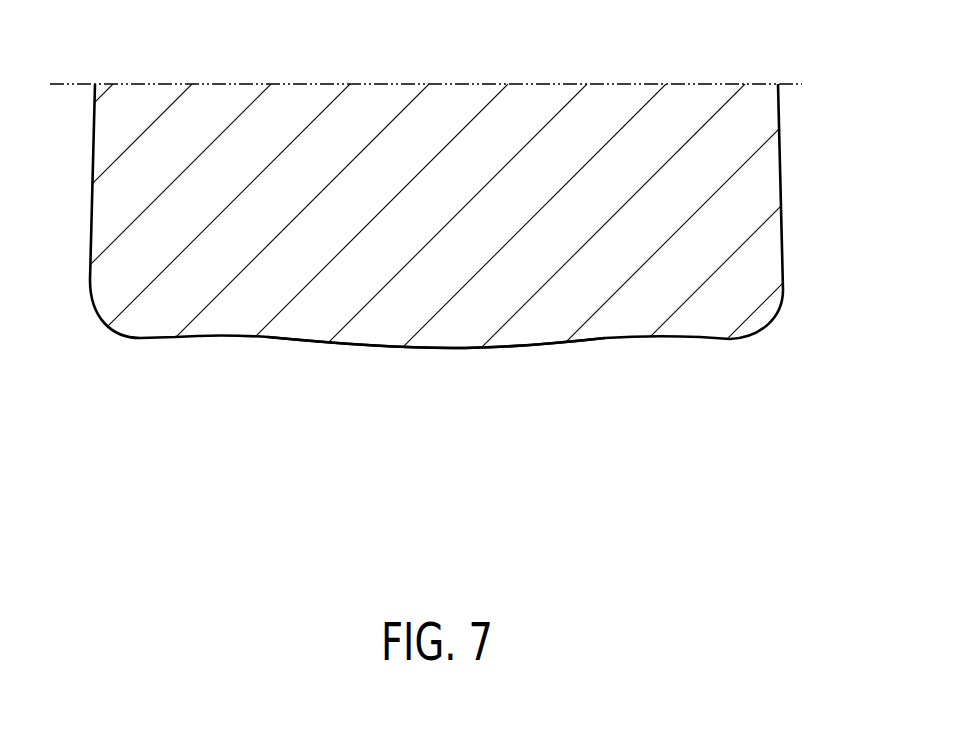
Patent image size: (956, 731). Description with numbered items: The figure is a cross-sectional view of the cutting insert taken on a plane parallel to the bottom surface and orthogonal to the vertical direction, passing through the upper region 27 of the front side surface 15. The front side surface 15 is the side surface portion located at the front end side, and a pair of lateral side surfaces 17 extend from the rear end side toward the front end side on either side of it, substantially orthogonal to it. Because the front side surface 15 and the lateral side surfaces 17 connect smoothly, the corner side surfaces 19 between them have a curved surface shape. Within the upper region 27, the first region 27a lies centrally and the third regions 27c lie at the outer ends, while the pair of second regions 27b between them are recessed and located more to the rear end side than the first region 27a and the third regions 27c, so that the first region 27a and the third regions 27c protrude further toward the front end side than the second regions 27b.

The front side surface 15 is at (452, 348).
The lateral side surfaces 17 is at (90, 145).
The corner side surfaces 19 is at (87, 290).
The upper region 27 is at (436, 459).
The first region 27a is at (600, 343).
The second regions 27b is at (174, 343).
The third regions 27c is at (198, 407).